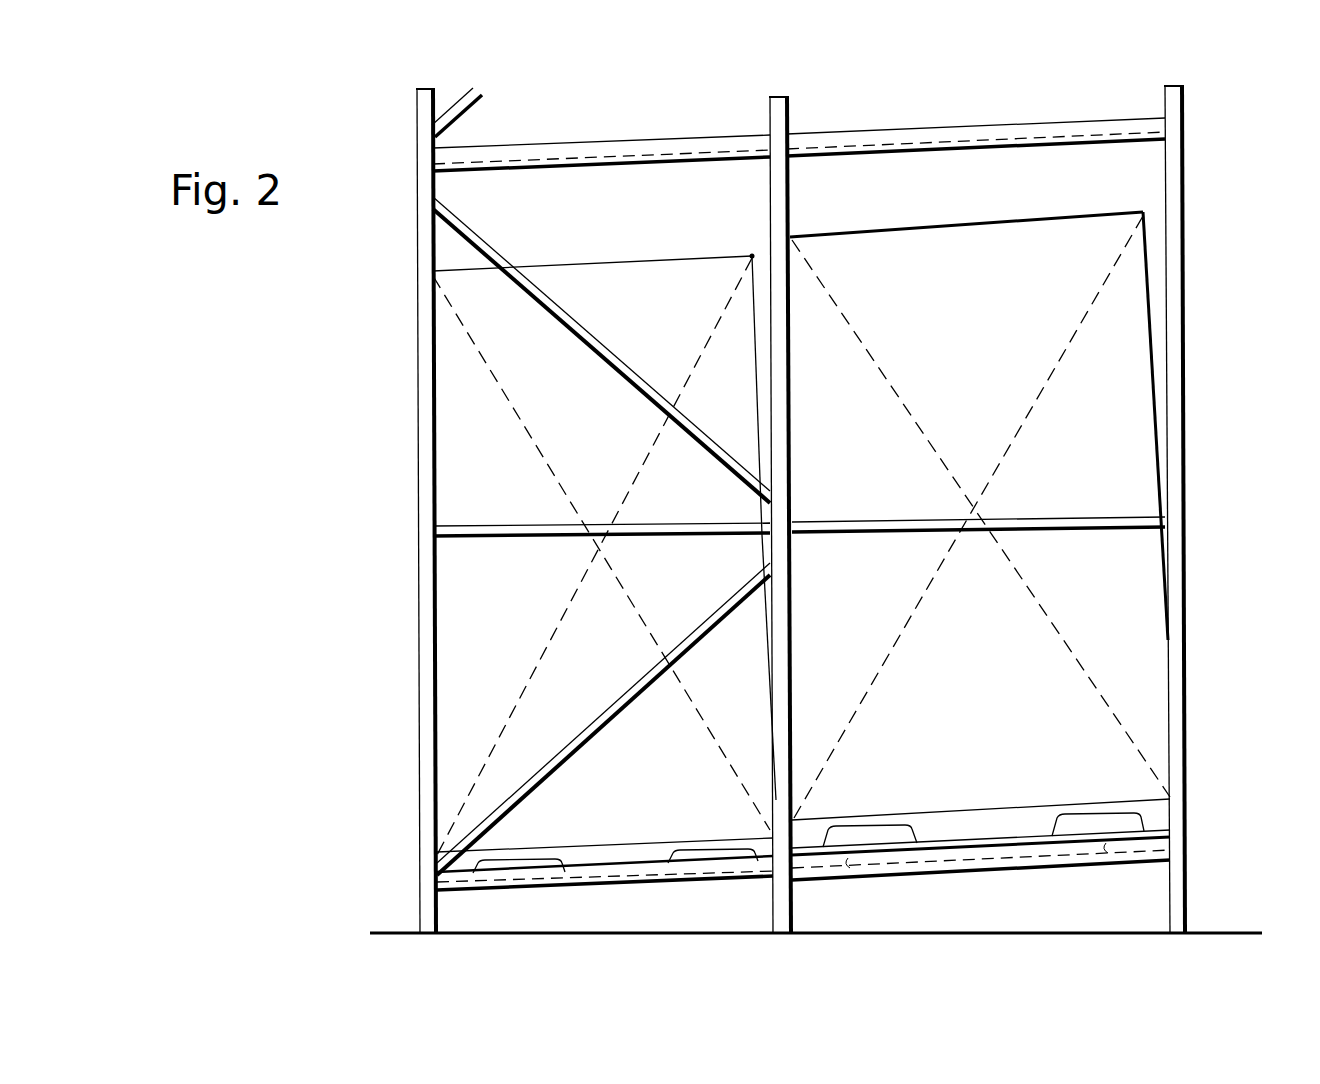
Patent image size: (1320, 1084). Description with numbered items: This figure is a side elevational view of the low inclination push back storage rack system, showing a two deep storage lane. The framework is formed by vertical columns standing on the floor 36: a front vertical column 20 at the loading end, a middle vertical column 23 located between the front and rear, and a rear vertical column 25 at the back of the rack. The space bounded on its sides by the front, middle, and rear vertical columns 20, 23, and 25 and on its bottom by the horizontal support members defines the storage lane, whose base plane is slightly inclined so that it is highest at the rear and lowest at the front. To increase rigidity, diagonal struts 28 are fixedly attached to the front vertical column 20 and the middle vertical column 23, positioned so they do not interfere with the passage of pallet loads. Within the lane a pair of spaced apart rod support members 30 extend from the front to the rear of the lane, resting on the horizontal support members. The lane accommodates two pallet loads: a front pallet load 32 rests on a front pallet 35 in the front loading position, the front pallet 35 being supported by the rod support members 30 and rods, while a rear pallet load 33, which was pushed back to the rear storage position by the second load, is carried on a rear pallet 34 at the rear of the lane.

The front vertical column 20 is at (420, 590).
The middle vertical column 23 is at (786, 195).
The rear vertical column 25 is at (1184, 210).
The diagonal strut 28 is at (535, 768).
The rod support member 30 is at (603, 168).
The front pallet load 32 is at (611, 477).
The rear pallet load 33 is at (981, 452).
The rear pallet 34 is at (1005, 820).
The front pallet 35 is at (590, 850).
The floor 36 is at (1085, 932).